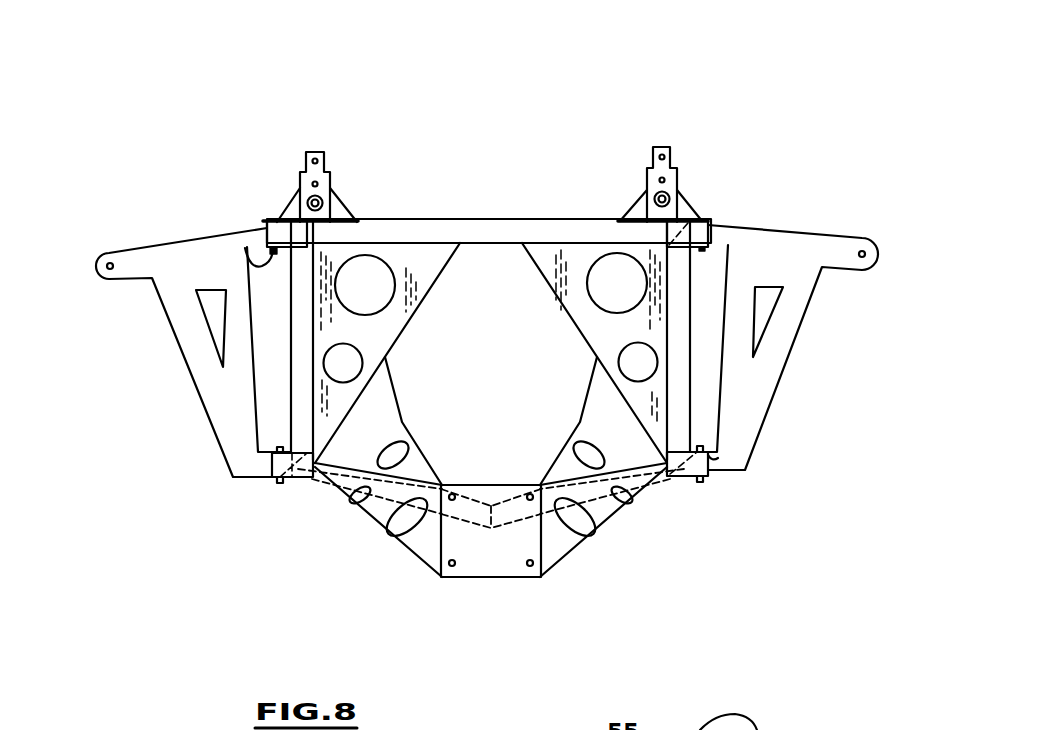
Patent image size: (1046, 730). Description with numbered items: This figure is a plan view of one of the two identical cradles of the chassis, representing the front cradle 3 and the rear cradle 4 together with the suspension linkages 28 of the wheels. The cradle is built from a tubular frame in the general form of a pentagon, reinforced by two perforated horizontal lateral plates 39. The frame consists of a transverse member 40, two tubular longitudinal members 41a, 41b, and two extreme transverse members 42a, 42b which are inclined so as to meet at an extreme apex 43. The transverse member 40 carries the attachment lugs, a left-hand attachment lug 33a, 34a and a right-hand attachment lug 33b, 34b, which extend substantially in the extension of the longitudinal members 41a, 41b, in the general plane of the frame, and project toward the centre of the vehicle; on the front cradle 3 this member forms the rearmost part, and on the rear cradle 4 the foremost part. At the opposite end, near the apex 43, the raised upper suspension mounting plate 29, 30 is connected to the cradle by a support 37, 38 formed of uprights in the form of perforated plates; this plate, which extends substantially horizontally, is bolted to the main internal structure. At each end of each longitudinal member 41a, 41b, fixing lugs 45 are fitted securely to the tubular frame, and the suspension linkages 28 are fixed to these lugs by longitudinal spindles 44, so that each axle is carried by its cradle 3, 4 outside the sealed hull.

The front cradle 3 is at (507, 344).
The rear cradle 4 is at (484, 137).
The suspension linkage 28 is at (235, 442).
The front suspension mounting plate 29 is at (524, 562).
The rear suspension mounting plate 30 is at (524, 562).
The left-hand attachment lug 33a is at (721, 158).
The right-hand attachment lug 33b is at (288, 158).
The left-hand attachment lug 34a is at (300, 176).
The right-hand attachment lug 34b is at (677, 172).
The support 37 is at (531, 504).
The support 38 is at (610, 512).
The perforated horizontal lateral plate 39 is at (408, 262).
The transverse member 40 is at (497, 228).
The tubular longitudinal member 41a is at (507, 341).
The tubular longitudinal member 41b is at (300, 332).
The extreme transverse member 42a is at (494, 540).
The extreme transverse member 42b is at (463, 513).
The extreme apex 43 is at (493, 530).
The longitudinal spindle 44 is at (263, 237).
The fixing lug 45 is at (268, 235).